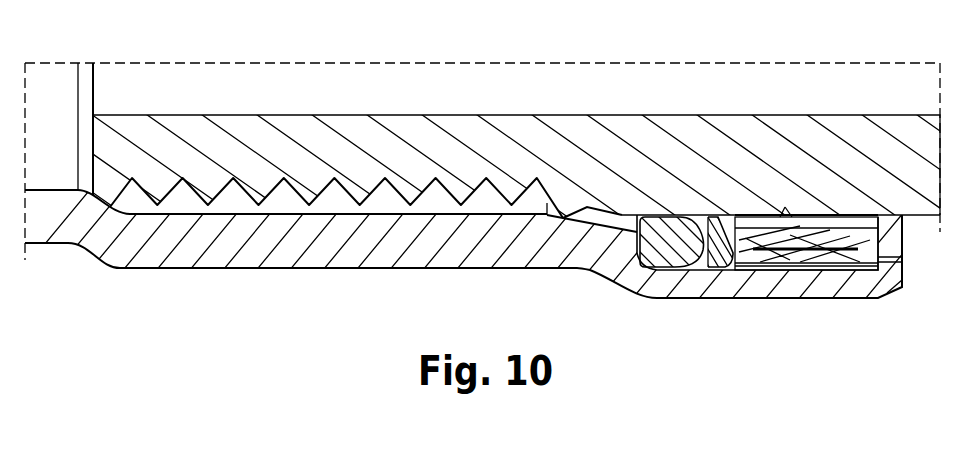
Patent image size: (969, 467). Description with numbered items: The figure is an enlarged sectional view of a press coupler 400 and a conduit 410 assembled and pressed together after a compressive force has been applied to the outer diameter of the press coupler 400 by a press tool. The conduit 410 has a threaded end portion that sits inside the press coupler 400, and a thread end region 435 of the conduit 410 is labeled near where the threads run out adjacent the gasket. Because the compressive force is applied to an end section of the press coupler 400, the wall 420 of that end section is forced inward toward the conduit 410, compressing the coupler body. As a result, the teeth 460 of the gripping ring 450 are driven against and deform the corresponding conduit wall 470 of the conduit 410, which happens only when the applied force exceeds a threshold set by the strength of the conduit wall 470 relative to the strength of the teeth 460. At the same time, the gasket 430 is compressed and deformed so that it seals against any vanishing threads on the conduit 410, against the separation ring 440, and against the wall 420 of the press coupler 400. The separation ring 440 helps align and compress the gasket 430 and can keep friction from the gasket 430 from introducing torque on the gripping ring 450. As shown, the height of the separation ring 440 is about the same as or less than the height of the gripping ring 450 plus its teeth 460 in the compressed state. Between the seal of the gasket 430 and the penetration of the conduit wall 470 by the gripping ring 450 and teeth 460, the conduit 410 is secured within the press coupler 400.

The press coupler 400 is at (95, 270).
The conduit 410 is at (922, 183).
The wall of the end section 420 is at (720, 287).
The gasket 430 is at (657, 245).
The thread end chamfer 435 is at (642, 198).
The separation ring 440 is at (712, 228).
The gripping ring 450 is at (815, 253).
The teeth 460 is at (828, 225).
The conduit wall 470 is at (748, 188).